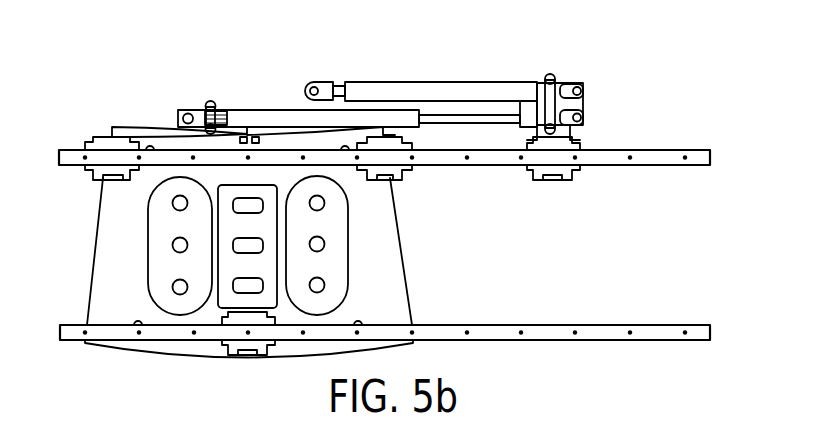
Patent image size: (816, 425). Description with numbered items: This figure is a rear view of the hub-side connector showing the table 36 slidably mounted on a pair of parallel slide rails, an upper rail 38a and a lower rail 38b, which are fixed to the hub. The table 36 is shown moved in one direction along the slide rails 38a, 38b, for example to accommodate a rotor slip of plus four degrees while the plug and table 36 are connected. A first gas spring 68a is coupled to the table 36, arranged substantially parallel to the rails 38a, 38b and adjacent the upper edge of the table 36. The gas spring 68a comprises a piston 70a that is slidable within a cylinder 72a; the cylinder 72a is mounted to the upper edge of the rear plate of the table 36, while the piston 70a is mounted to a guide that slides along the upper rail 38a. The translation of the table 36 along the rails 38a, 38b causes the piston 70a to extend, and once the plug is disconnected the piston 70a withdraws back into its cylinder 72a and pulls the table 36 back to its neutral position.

The table 36 is at (420, 253).
The upper rail 38a is at (665, 155).
The lower rail 38b is at (655, 330).
The first gas spring 68a is at (347, 79).
The piston 70a is at (468, 112).
The cylinder 72a is at (280, 115).